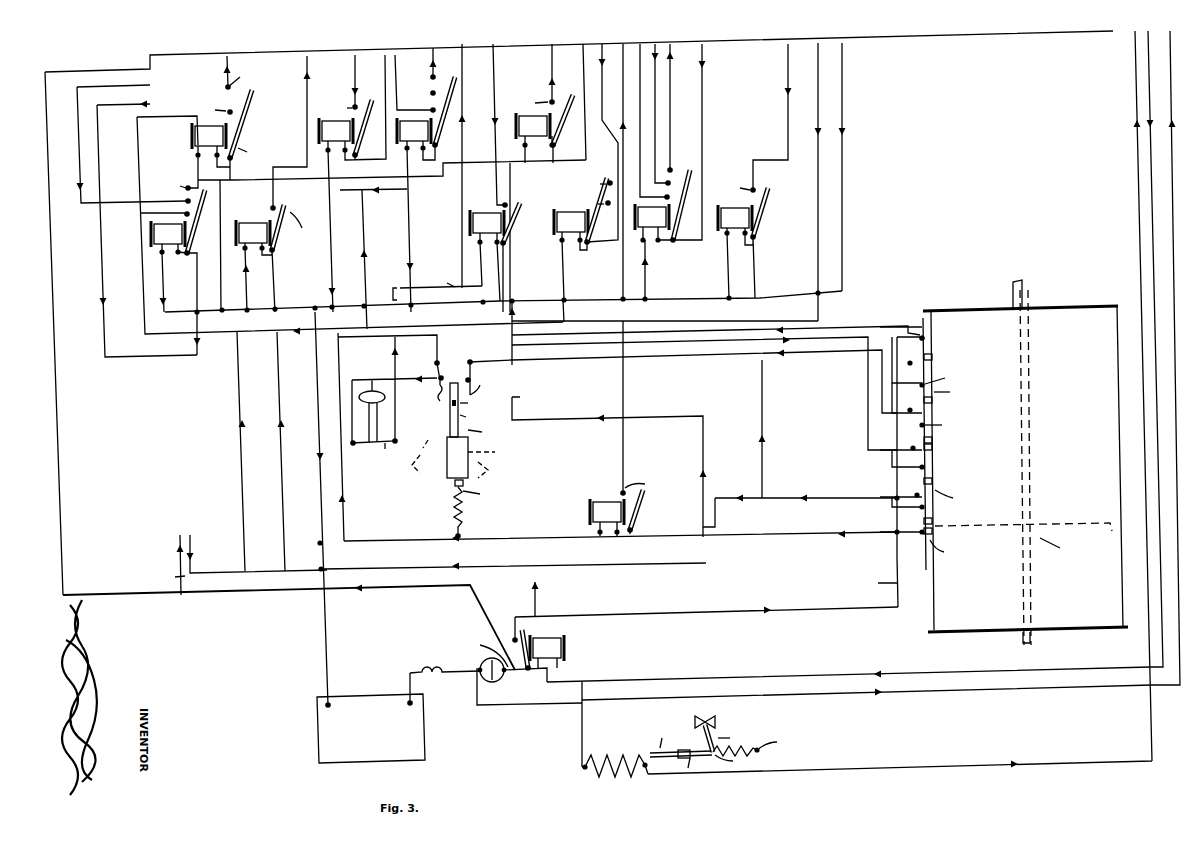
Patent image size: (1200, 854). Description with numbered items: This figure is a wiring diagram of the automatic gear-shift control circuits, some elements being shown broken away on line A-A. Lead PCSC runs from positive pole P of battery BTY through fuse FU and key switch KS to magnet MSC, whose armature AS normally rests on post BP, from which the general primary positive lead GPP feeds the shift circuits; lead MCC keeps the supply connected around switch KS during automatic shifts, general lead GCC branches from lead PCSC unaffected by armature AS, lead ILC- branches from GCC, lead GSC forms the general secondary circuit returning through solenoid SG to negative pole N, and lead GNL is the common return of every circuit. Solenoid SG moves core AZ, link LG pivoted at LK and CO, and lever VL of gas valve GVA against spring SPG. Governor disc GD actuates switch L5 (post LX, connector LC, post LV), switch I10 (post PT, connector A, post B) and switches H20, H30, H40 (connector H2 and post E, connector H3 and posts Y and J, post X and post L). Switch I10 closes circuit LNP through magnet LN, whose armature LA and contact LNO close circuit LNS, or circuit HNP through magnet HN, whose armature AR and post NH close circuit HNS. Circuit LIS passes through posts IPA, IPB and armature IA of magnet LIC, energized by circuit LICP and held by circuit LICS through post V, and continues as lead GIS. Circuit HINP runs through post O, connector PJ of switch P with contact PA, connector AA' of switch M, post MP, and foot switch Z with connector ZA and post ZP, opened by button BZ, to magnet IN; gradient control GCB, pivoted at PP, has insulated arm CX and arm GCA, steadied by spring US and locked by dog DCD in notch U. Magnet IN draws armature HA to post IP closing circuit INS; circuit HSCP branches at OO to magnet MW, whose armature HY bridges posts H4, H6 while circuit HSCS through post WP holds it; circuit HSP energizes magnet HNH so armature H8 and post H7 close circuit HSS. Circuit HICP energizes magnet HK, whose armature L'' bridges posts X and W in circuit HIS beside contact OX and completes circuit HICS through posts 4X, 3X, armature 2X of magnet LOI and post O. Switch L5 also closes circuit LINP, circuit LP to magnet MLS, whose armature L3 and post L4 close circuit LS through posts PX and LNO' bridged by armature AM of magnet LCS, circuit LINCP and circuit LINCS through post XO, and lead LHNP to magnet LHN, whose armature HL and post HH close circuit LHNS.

The magnet LCS is at (211, 217).
The post XO is at (242, 135).
The armature AM is at (252, 153).
The post PX is at (214, 108).
The secondary circuit LS is at (271, 182).
The post LNO' is at (248, 79).
The primary circuit HICP is at (343, 200).
The circuit HIS is at (184, 222).
The magnet HK is at (175, 288).
The post W is at (179, 184).
The contact OX is at (177, 198).
The post O is at (561, 321).
The armature L'' is at (194, 223).
The magnet LHN is at (255, 266).
The post HH is at (283, 229).
The armature HL is at (305, 225).
The secondary circuit HICS is at (384, 192).
The primary circuit LINCP is at (473, 409).
The secondary circuit LINCS is at (420, 186).
The secondary circuit LHNS is at (271, 184).
The lead LHNP is at (525, 415).
The lead ILC ILC- is at (200, 564).
The primary circuit LP is at (446, 330).
The magnet MLS is at (352, 107).
The armature L3 is at (366, 124).
The post L4 is at (345, 106).
The secondary circuit HSCS is at (409, 148).
The primary circuit HSCP is at (426, 230).
The magnet MW is at (416, 139).
The armature HY is at (449, 112).
The post WP is at (422, 104).
The post H4 is at (687, 207).
The post H6 is at (444, 64).
The secondary circuit HSS is at (484, 178).
The magnet HNH is at (535, 138).
The armature H8 is at (554, 129).
The post H7 is at (536, 101).
The primary circuit HSP is at (571, 157).
The magnet IN is at (487, 261).
The armature HA is at (510, 234).
The post IP is at (502, 198).
The secondary circuit INS is at (499, 157).
The primary circuit HINP is at (656, 346).
The branch point OO is at (441, 279).
The magnet LOI is at (571, 254).
The armature 2X is at (596, 214).
The post 3X is at (599, 183).
The post 4X is at (597, 203).
The magnet LIC is at (652, 250).
The armature IA is at (685, 206).
The post IPB is at (681, 161).
The post IPA is at (680, 175).
The post V is at (678, 190).
The circuit LIS is at (665, 107).
The secondary circuit LICS is at (652, 161).
The primary circuit LICP is at (674, 162).
The magnet LN is at (736, 251).
The armature LA is at (769, 214).
The contact member LNO is at (734, 186).
The secondary circuit LNS is at (766, 160).
The primary circuit LNP is at (789, 374).
The secondary circuit HNS is at (620, 292).
The lead GIS is at (848, 167).
The lead GNL is at (503, 494).
The line A-A is at (579, 313).
The general secondary circuit lead GSC is at (867, 402).
The lead MCC is at (863, 365).
The general lead GCC is at (277, 524).
The button BZ is at (394, 390).
The foot actuated switch Z is at (356, 437).
The post ZP is at (404, 435).
The connector ZA is at (387, 454).
The spring connector AA' is at (424, 364).
The switch M is at (447, 367).
The post MP is at (442, 410).
The positive pole P is at (455, 536).
The spring connector PJ is at (477, 373).
The contact member PA is at (482, 387).
The upper arm CX is at (476, 402).
The pivot PP is at (474, 414).
The gradient control GCB is at (479, 450).
The lower arm GCA is at (468, 459).
The notch U is at (472, 480).
The dog DCD is at (487, 493).
The spring US is at (473, 513).
The primary circuit LINP is at (616, 388).
The magnet HN is at (610, 517).
The armature AR is at (646, 511).
The post NH is at (643, 408).
The primary circuit HNP is at (701, 508).
The governor disc GD is at (1025, 462).
The post X is at (911, 444).
The button switch H40 is at (948, 355).
The post Y is at (938, 379).
The connector H3 is at (952, 390).
The button switch H30 is at (949, 406).
The spring connector H2 is at (947, 436).
The switch H20 is at (951, 448).
The post PT is at (939, 468).
The spring connector A is at (944, 482).
The switch I10 is at (956, 497).
The post LX is at (937, 511).
The switch L5 is at (1018, 522).
The spring connector LC is at (940, 544).
The post L is at (907, 447).
The post J is at (907, 398).
The post E is at (901, 452).
The post B is at (901, 507).
The post LV is at (908, 582).
The general primary positive lead GPP is at (706, 602).
The post BP is at (511, 630).
The armature AS is at (530, 658).
The magnet MSC is at (529, 670).
The key operated switch KS is at (492, 679).
The lead PCSC is at (434, 662).
The fuse FU is at (445, 679).
The battery BTY is at (371, 718).
The negative pole N is at (331, 709).
The solenoid SG is at (615, 770).
The core AZ is at (663, 736).
The link LG is at (681, 746).
The pivot LK is at (693, 770).
The rotary gas valve GVA is at (704, 727).
The lever VL is at (733, 736).
The pivot CO is at (734, 762).
The spring SPG is at (757, 744).